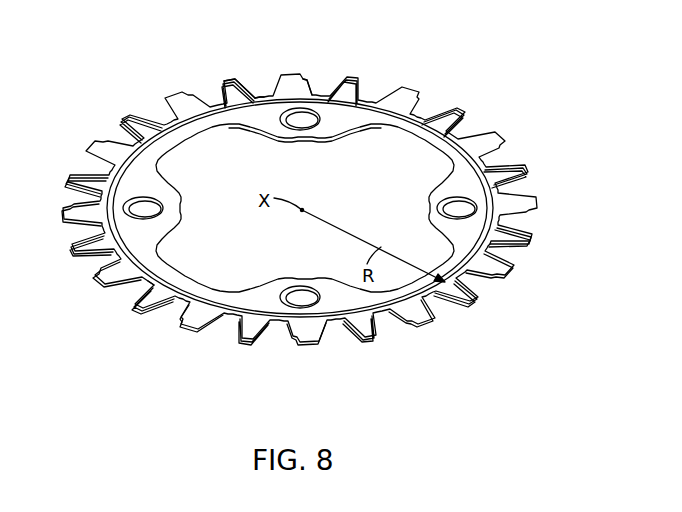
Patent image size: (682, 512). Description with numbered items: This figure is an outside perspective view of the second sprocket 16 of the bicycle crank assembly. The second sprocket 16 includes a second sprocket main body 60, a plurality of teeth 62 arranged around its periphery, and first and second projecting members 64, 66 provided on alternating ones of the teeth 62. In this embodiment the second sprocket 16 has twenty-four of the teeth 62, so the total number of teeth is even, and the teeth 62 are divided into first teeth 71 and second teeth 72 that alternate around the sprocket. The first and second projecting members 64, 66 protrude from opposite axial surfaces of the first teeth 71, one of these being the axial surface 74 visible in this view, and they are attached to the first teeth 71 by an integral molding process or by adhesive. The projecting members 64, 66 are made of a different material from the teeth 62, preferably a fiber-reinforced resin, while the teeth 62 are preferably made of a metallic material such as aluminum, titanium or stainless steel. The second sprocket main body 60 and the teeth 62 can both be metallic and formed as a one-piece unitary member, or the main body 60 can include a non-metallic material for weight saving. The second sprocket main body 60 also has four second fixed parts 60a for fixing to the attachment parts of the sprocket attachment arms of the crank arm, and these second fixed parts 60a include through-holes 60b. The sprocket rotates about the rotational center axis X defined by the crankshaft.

The second sprocket 16 is at (500, 66).
The second sprocket main body 60 is at (217, 113).
The second fixed part 60a is at (168, 197).
The through-hole 60b is at (270, 115).
The teeth 62 is at (219, 76).
The first projecting member 64 is at (240, 93).
The second projecting member 66 is at (160, 306).
The first tooth 71 is at (230, 80).
The second tooth 72 is at (295, 74).
The axial surface 74 is at (307, 93).